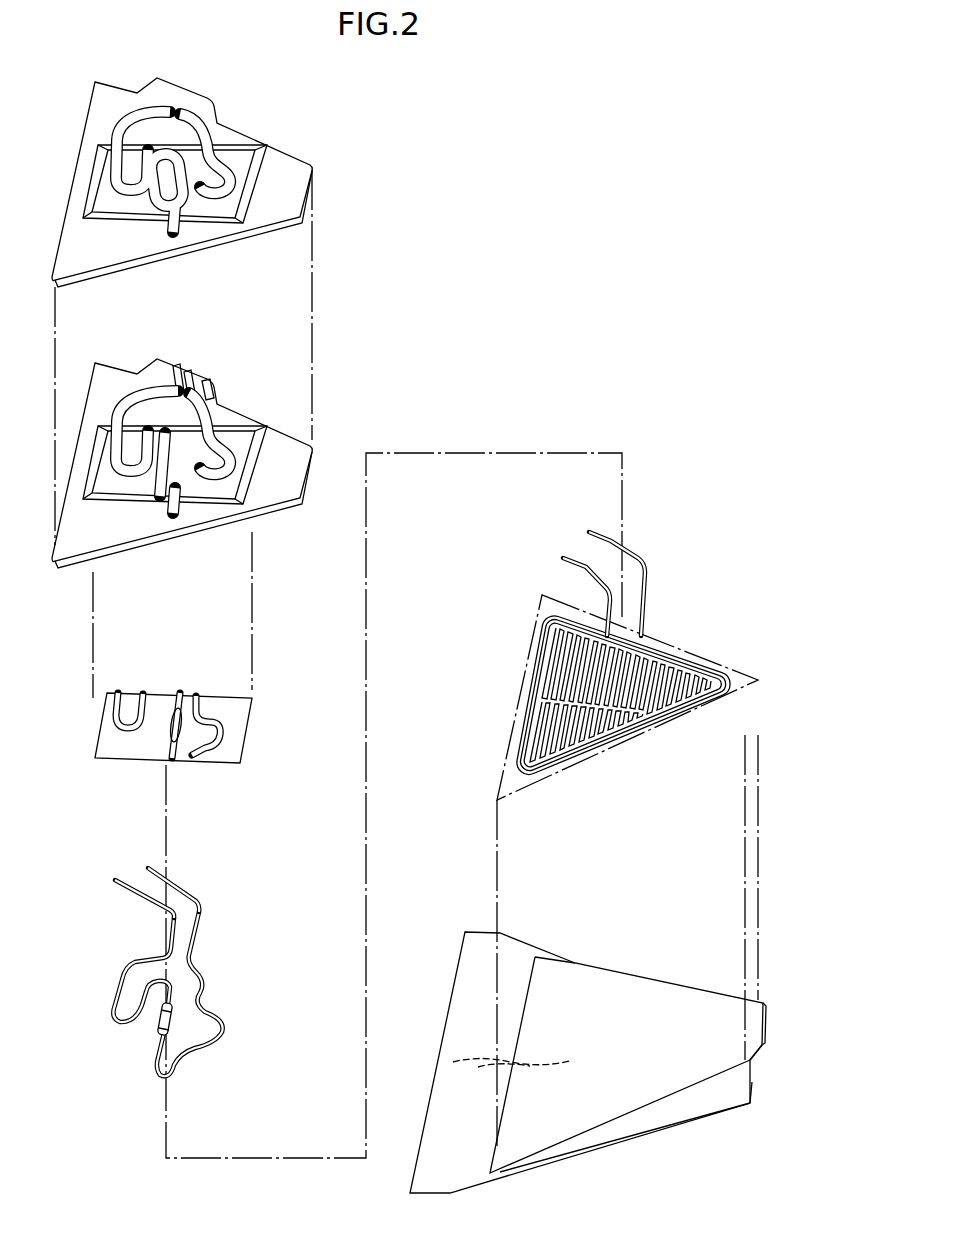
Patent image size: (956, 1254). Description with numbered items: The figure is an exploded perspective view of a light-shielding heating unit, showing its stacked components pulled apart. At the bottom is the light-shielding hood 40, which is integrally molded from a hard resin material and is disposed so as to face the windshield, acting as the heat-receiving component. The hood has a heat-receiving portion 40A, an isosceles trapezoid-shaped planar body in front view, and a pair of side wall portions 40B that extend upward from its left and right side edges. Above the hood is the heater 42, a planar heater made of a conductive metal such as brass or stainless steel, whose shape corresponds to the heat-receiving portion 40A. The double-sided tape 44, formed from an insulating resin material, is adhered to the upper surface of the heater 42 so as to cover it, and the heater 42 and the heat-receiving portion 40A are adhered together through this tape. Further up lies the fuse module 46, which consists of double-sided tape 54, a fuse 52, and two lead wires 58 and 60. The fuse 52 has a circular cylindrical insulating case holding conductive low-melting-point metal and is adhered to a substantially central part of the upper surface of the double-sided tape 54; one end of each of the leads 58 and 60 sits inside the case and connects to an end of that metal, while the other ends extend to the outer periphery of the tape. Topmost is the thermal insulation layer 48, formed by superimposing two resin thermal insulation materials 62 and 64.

The light-shielding hood 40 is at (613, 1031).
The heat-receiving portion 40A is at (658, 998).
The side wall portions 40B is at (767, 1027).
The heater 42 is at (668, 640).
The double-sided tape 44 is at (640, 653).
The fuse module 46 is at (171, 955).
The thermal insulation layer 48 is at (377, 110).
The fuse 52 is at (160, 1020).
The double-sided tape 54 is at (217, 697).
The lead wire 58 is at (170, 880).
The lead wire 60 is at (143, 897).
The thermal insulation material 62 is at (313, 462).
The thermal insulation material 64 is at (294, 151).